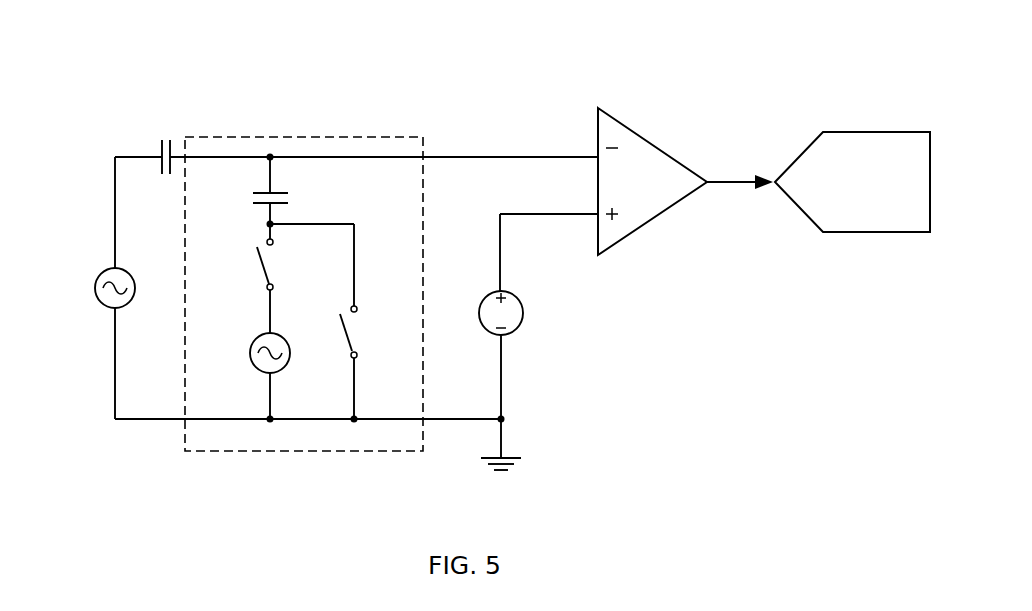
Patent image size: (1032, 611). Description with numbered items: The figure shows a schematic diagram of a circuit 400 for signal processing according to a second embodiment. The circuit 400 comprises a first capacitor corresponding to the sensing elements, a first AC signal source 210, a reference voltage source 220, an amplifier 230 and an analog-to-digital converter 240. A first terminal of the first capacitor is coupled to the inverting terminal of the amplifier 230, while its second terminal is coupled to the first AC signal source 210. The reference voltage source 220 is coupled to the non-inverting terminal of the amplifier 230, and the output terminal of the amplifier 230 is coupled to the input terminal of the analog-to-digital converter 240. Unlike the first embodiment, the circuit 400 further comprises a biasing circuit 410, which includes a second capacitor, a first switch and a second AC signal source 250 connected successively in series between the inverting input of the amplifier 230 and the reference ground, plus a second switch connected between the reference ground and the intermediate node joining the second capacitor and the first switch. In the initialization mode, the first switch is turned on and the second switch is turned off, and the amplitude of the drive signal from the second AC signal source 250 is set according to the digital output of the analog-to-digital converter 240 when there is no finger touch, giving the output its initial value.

The circuit for signal processing 400 is at (840, 467).
The first AC signal source 210 is at (97, 283).
The reference voltage source 220 is at (522, 316).
The amplifier 230 is at (642, 136).
The analog-to-digital converter 240 is at (853, 131).
The second AC signal source 250 is at (253, 342).
The biasing circuit 410 is at (327, 137).